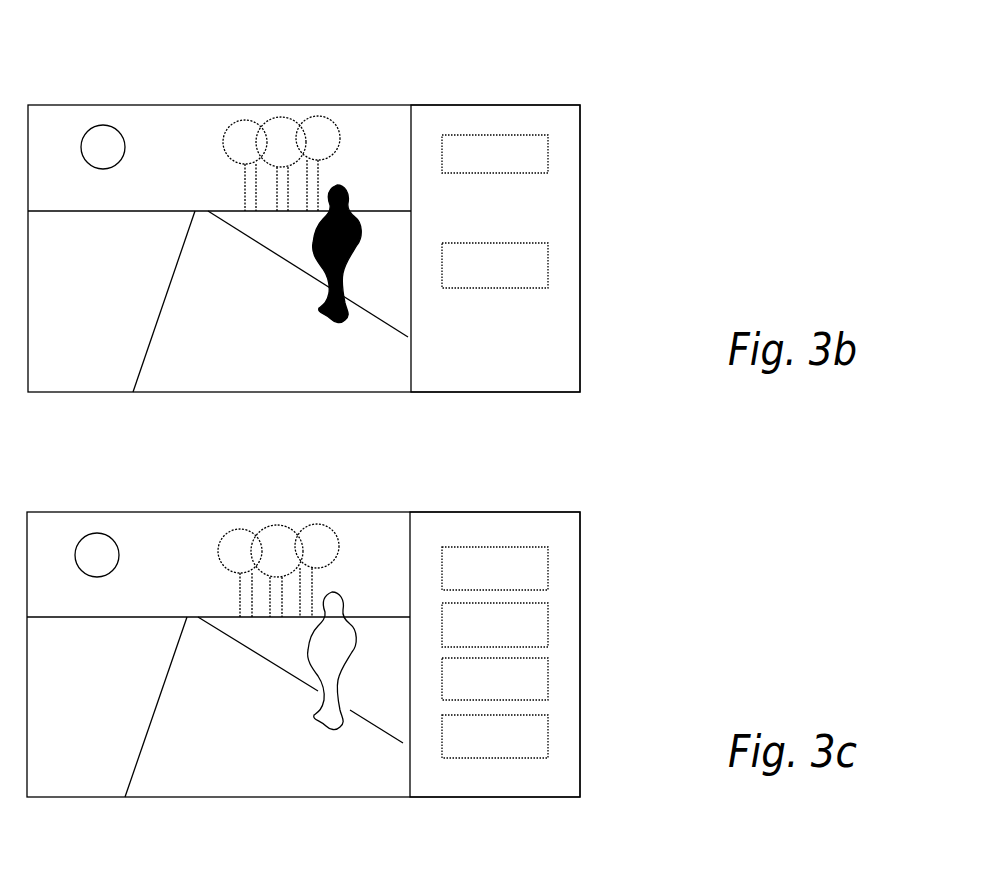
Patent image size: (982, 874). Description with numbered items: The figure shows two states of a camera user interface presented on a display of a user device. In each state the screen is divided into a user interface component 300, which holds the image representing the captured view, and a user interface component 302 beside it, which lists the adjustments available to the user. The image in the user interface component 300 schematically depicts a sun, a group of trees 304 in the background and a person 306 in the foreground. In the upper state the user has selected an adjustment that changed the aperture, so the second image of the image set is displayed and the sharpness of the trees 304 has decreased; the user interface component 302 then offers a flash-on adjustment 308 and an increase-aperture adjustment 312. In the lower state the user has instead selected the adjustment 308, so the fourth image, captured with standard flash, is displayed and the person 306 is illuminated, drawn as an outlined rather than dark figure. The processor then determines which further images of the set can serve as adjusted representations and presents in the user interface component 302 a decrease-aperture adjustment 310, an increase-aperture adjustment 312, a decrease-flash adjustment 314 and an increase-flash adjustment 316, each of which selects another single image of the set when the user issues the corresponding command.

In FIG. 3B, the user interface component 300 is at (187, 105).
In FIG. 3C, the user interface component 300 is at (187, 512).
In FIG. 3B, the user interface component 302 is at (495, 108).
In FIG. 3C, the user interface component 302 is at (495, 512).
In FIG. 3B, the group of trees 304 is at (283, 118).
In FIG. 3C, the group of trees 304 is at (279, 521).
In FIG. 3B, the person 306 is at (350, 323).
In FIG. 3C, the person 306 is at (348, 710).
In FIG. 3B, the adjustment 308 is at (547, 138).
In FIG. 3C, the adjustment 310 is at (548, 547).
In FIG. 3B, the adjustment 312 is at (547, 246).
In FIG. 3C, the adjustment 312 is at (548, 603).
In FIG. 3C, the adjustment 314 is at (548, 658).
In FIG. 3C, the adjustment 316 is at (548, 715).